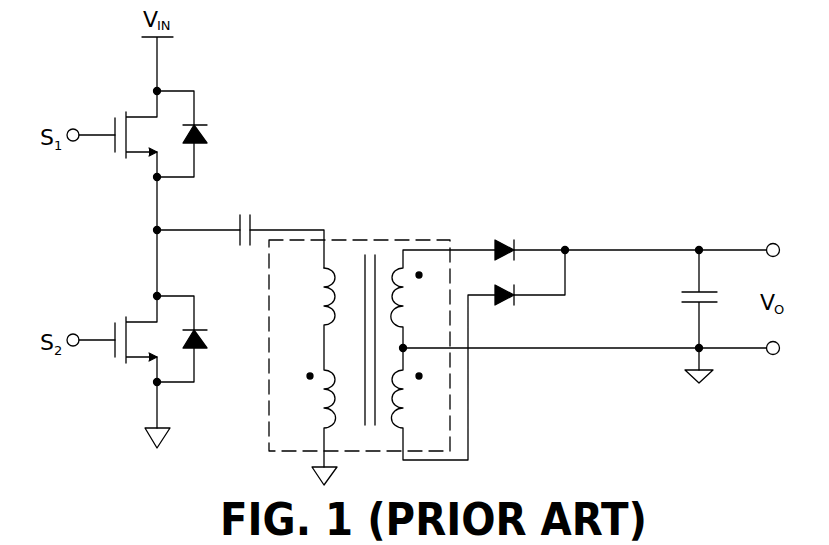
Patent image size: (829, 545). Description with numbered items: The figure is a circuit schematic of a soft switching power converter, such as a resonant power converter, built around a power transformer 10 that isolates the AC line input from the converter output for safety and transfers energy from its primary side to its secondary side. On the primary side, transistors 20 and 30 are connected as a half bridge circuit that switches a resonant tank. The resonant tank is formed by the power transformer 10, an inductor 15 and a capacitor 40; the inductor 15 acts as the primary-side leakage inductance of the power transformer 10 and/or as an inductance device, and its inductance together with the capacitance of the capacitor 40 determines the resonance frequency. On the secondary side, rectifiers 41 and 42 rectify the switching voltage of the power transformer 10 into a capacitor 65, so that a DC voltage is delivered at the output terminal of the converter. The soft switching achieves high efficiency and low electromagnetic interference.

The power transformer 10 is at (347, 253).
The inductor 15 is at (298, 338).
The transistor 20 is at (170, 127).
The transistor 30 is at (138, 368).
The capacitor 40 is at (263, 205).
The rectifier 41 is at (508, 228).
The rectifier 42 is at (507, 312).
The capacitor 65 is at (684, 315).